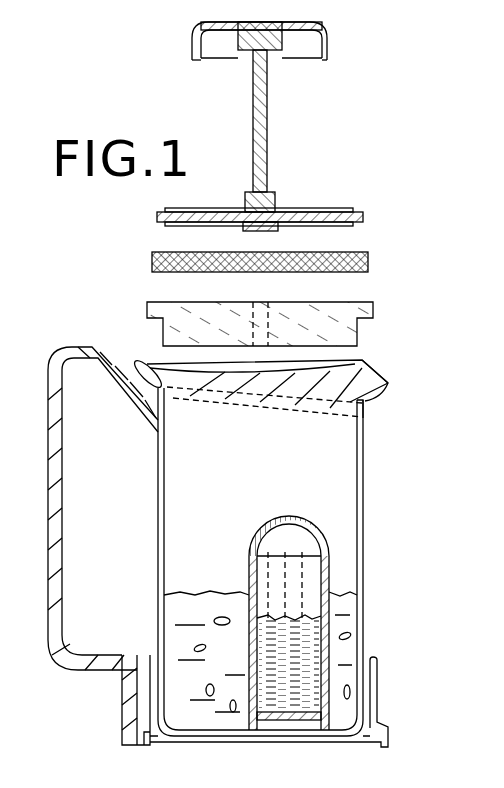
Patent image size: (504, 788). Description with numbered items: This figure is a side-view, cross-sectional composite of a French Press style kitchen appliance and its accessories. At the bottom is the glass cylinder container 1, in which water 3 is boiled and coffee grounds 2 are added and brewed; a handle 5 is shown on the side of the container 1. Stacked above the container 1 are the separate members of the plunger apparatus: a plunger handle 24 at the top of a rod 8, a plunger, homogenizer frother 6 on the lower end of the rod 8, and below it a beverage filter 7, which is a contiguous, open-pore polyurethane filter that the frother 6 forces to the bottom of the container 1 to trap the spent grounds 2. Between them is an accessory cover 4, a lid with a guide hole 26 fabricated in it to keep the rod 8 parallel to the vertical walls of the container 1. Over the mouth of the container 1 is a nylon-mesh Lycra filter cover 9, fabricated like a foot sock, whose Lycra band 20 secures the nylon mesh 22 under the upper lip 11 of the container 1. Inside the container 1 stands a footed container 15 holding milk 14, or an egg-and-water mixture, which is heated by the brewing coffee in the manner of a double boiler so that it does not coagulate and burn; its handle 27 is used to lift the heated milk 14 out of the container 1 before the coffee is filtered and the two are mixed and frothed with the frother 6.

The glass cylinder container 1 is at (362, 463).
The coffee grounds 2 is at (350, 633).
The water 3 is at (347, 610).
The accessory cover 4 is at (340, 326).
The handle 5 is at (110, 358).
The plunger, homogenizer frother 6 is at (279, 201).
The beverage filter 7 is at (367, 253).
The rod 8 is at (237, 135).
The filter cover 9 is at (260, 422).
The upper lip 11 is at (147, 360).
The milk 14 is at (298, 694).
The footed container 15 is at (329, 583).
The Lycra band 20 is at (365, 417).
The nylon mesh 22 is at (390, 385).
The plunger handle 24 is at (325, 36).
The guide hole 26 is at (270, 308).
The handle 27 is at (265, 528).